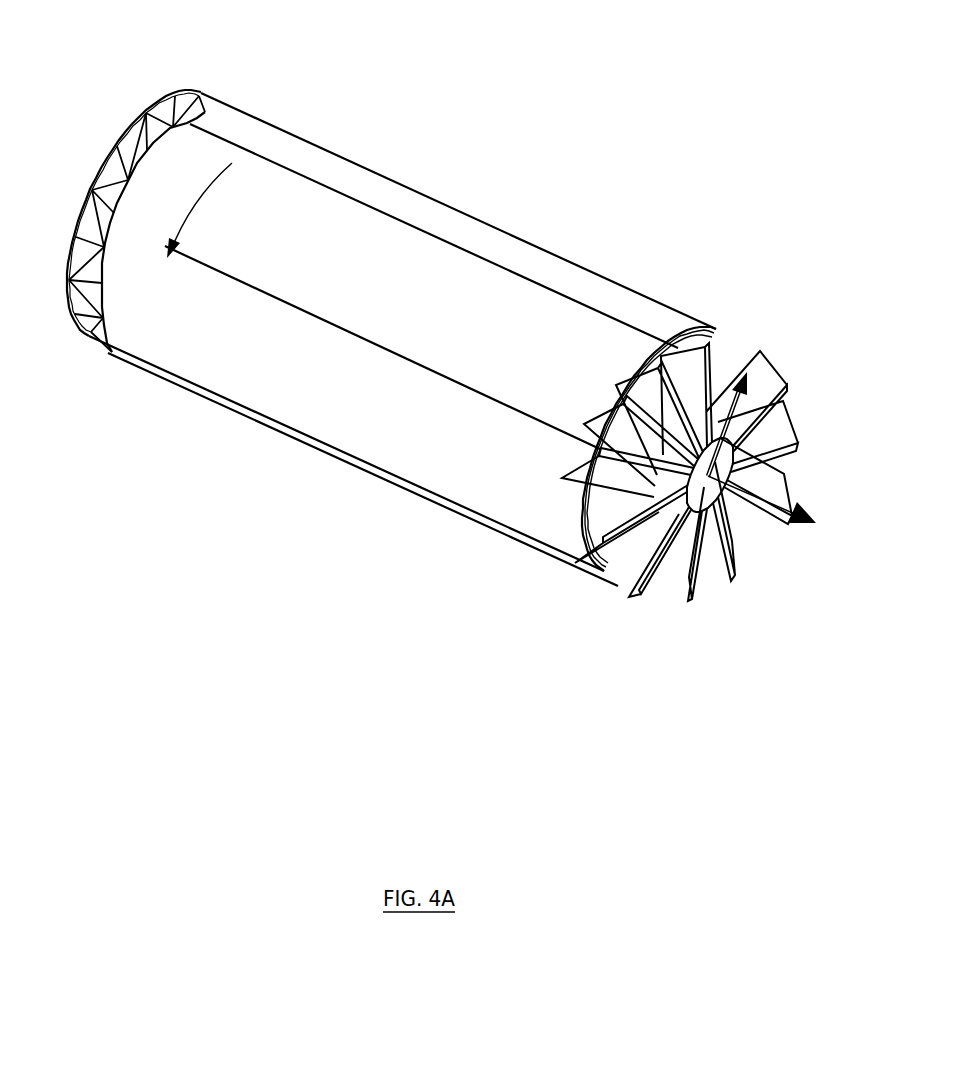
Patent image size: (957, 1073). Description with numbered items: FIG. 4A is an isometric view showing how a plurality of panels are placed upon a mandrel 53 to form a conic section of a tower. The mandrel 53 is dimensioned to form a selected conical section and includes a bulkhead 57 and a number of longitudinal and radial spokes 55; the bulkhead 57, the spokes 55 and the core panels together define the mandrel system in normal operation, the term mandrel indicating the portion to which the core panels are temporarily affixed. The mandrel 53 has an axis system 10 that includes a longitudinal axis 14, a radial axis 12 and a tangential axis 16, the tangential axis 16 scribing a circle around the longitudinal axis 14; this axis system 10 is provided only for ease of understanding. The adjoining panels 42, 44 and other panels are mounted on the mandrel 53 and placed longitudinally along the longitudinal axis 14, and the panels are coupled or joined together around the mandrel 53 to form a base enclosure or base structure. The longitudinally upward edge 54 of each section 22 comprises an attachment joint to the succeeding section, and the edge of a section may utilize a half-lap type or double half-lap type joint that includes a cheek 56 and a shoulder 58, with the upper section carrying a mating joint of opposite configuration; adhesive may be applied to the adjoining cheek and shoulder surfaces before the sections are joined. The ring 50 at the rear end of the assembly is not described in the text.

The axis system 10 is at (780, 285).
The radial axis 12 is at (735, 422).
The longitudinal axis 14 is at (783, 507).
The tangential axis 16 is at (182, 232).
The section 22 is at (420, 190).
The panel 42 is at (394, 309).
The panel 44 is at (379, 428).
The rear end ring 50 is at (163, 108).
The mandrel 53 is at (733, 577).
The longitudinally upward edge 54 is at (580, 487).
The spokes 55 is at (618, 550).
The cheek 56 is at (648, 365).
The bulkhead 57 is at (108, 145).
The shoulder 58 is at (603, 417).